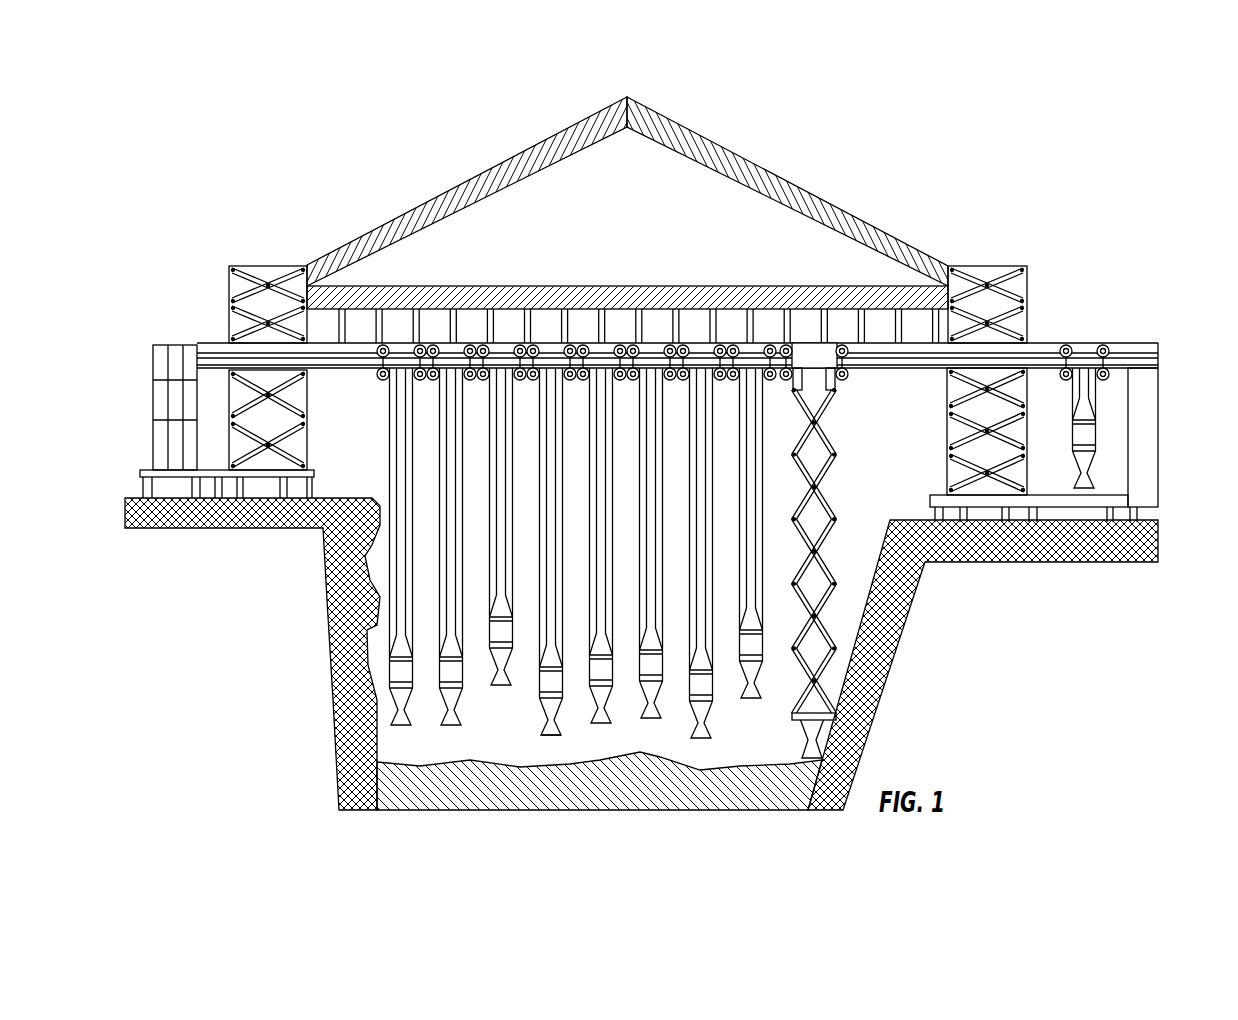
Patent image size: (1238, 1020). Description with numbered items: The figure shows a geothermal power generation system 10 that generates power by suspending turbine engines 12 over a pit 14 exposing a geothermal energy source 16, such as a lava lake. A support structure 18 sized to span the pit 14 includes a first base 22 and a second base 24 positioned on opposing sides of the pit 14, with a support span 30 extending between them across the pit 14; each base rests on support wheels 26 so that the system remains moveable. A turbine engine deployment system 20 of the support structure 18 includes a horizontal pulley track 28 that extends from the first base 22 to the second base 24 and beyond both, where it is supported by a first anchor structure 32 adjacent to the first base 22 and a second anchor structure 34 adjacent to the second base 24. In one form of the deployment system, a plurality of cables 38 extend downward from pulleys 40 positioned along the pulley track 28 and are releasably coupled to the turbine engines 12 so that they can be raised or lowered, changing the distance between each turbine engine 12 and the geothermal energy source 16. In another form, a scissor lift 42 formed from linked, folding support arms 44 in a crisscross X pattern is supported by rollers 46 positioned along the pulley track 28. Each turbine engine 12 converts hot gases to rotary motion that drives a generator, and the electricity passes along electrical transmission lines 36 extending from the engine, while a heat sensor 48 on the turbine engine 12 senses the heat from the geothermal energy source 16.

The geothermal power generation system 10 is at (972, 200).
The turbine engine 12 is at (547, 717).
The pit 14 is at (852, 529).
The geothermal energy source 16 is at (742, 767).
The support structure 18 is at (855, 196).
The turbine engine deployment system 20 is at (1085, 336).
The first base 22 is at (228, 326).
The second base 24 is at (1028, 303).
The support wheel 26 is at (143, 491).
The pulley track 28 is at (1141, 345).
The support span 30 is at (652, 286).
The first anchor structure 32 is at (153, 397).
The second anchor structure 34 is at (1160, 416).
The electrical transmission line 36 is at (452, 545).
The cable 38 is at (462, 402).
The pulley 40 is at (444, 365).
The scissor lift 42 is at (839, 414).
The folding support arm 44 is at (833, 436).
The roller 46 is at (842, 347).
The heat sensor 48 is at (553, 736).